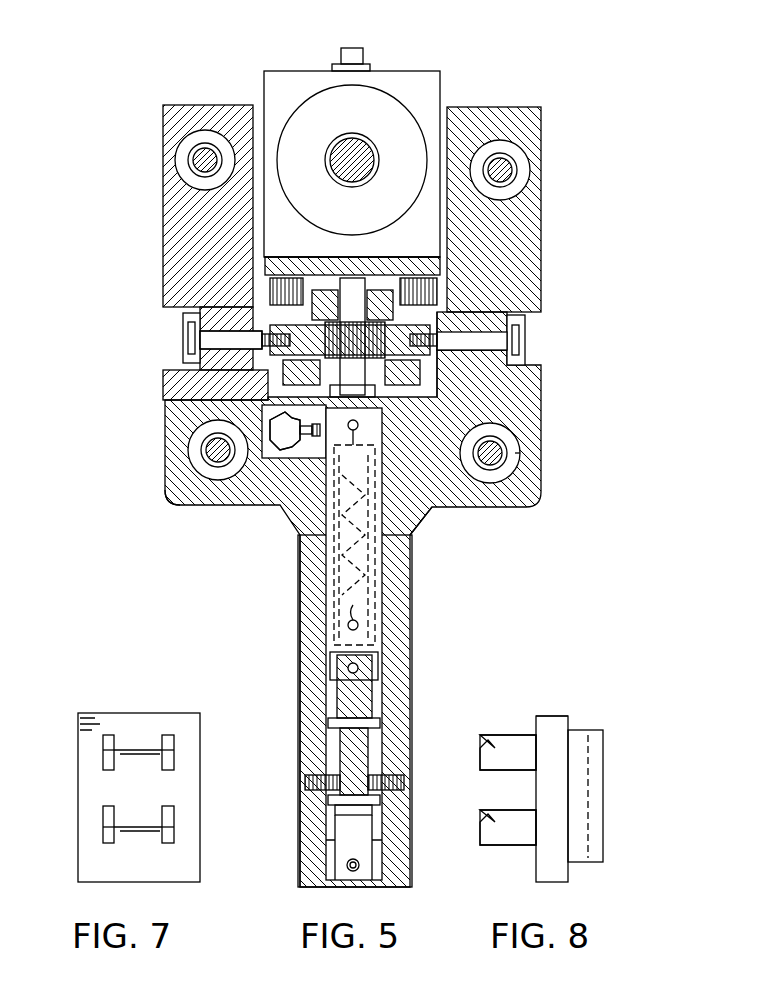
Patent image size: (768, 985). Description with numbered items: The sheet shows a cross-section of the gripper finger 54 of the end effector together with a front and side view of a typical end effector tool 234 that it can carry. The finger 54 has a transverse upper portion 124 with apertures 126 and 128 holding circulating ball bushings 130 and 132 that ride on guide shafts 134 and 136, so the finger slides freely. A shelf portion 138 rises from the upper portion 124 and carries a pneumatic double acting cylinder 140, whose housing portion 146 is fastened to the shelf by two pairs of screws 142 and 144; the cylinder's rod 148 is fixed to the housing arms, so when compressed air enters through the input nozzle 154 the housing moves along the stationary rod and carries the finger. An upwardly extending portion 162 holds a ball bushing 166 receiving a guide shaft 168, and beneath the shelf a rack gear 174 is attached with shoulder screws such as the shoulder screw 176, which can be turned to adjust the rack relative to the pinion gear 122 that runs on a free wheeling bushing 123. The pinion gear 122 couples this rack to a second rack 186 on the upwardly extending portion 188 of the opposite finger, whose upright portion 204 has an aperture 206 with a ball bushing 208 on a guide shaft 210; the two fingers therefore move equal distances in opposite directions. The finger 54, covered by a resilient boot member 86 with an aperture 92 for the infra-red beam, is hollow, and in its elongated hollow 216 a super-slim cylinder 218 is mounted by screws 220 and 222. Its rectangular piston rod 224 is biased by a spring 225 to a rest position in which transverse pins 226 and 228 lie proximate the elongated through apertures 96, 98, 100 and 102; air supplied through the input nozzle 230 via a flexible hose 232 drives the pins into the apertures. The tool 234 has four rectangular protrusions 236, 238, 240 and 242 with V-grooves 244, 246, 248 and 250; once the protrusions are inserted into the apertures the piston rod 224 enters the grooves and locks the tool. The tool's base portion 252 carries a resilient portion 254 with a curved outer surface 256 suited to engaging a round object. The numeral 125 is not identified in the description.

In FIG. 5, the gripper finger 54 is at (395, 562).
In FIG. 5, the resilient boot member 86 is at (300, 578).
In FIG. 5, the aperture 92 is at (347, 866).
In FIG. 5, the elongated through aperture 96 is at (332, 750).
In FIG. 5, the elongated through aperture 98 is at (380, 745).
In FIG. 5, the elongated through aperture 100 is at (332, 838).
In FIG. 5, the elongated through aperture 102 is at (375, 832).
In FIG. 5, the pinion gear 122 is at (440, 368).
In FIG. 5, the free wheeling bushing 123 is at (335, 257).
In FIG. 5, the upper portion of gripper finger 124 is at (520, 490).
In FIG. 5, the lower left block 125 is at (265, 383).
In FIG. 5, the aperture 126 is at (195, 468).
In FIG. 5, the aperture 128 is at (515, 460).
In FIG. 5, the circulating ball bushing 130 is at (205, 428).
In FIG. 5, the circulating ball bushing 132 is at (505, 428).
In FIG. 5, the guide shaft 134 is at (205, 448).
In FIG. 5, the guide shaft 136 is at (500, 453).
In FIG. 5, the shelf portion 138 is at (445, 268).
In FIG. 5, the pneumatic double acting cylinder 140 is at (380, 80).
In FIG. 5, the screw 142 is at (250, 332).
In FIG. 5, the screw 144 is at (445, 285).
In FIG. 5, the housing portion of cylinder 146 is at (435, 88).
In FIG. 5, the rod 148 is at (343, 150).
In FIG. 5, the input nozzle 154 is at (362, 48).
In FIG. 5, the upwardly extending portion 162 is at (535, 118).
In FIG. 5, the circulating ball bushing 166 is at (520, 153).
In FIG. 5, the guide shaft 168 is at (513, 172).
In FIG. 5, the rack gear 174 is at (485, 318).
In FIG. 5, the shoulder screw 176 is at (525, 335).
In FIG. 5, the rack 186 is at (183, 342).
In FIG. 5, the upwardly extending portion 188 is at (270, 300).
In FIG. 5, the upright portion 204 is at (170, 222).
In FIG. 5, the aperture 206 is at (182, 168).
In FIG. 5, the circulating ball bushing 208 is at (192, 155).
In FIG. 5, the guide shaft 210 is at (205, 150).
In FIG. 5, the elongated hollow 216 is at (384, 590).
In FIG. 5, the super-slim cylinder 218 is at (378, 615).
In FIG. 5, the screw 220 is at (350, 507).
In FIG. 5, the screw 222 is at (349, 604).
In FIG. 5, the piston rod 224 is at (360, 690).
In FIG. 5, the spring 225 is at (412, 535).
In FIG. 5, the transverse pin 226 is at (378, 723).
In FIG. 5, the transverse pin 228 is at (380, 800).
In FIG. 5, the input nozzle 230 is at (295, 450).
In FIG. 5, the flexible hose 232 is at (275, 458).
In FIG. 7, the end effector tool 234 is at (100, 870).
In FIG. 8, the end effector tool 234 is at (570, 720).
In FIG. 7, the protrusion 236 is at (103, 755).
In FIG. 7, the protrusion 238 is at (175, 755).
In FIG. 8, the protrusion 238 is at (503, 764).
In FIG. 7, the protrusion 240 is at (103, 835).
In FIG. 7, the protrusion 242 is at (172, 845).
In FIG. 8, the protrusion 242 is at (480, 840).
In FIG. 7, the V-groove 244 is at (167, 735).
In FIG. 8, the V-groove 244 is at (500, 735).
In FIG. 7, the V-groove 246 is at (110, 735).
In FIG. 7, the V-groove 248 is at (103, 818).
In FIG. 8, the V-groove 248 is at (505, 815).
In FIG. 7, the V-groove 250 is at (172, 818).
In FIG. 7, the base portion 252 is at (83, 730).
In FIG. 8, the base portion 252 is at (558, 866).
In FIG. 8, the resilient portion 254 is at (600, 745).
In FIG. 8, the curved outer surface 256 is at (592, 800).